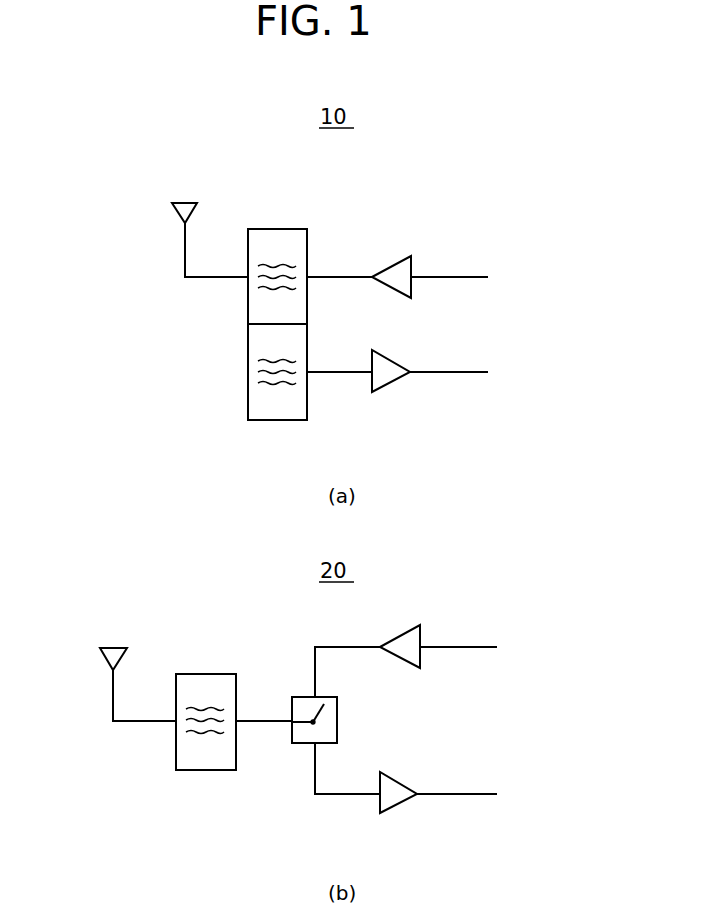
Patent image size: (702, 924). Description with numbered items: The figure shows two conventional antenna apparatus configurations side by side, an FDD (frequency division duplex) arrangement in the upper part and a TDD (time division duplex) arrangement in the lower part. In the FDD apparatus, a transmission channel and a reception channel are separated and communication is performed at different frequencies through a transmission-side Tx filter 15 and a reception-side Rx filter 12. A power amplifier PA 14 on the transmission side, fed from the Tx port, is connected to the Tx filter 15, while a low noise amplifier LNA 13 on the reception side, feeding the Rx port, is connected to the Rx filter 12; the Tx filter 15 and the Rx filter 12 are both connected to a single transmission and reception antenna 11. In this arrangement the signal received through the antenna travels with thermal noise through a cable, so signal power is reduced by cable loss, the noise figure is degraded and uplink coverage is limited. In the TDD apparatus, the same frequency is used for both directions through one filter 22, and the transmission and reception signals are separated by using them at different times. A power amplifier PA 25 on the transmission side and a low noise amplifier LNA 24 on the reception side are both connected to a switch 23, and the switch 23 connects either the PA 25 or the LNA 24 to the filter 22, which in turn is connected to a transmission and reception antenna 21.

The transmission and reception antenna 11 is at (172, 214).
The Rx filter 12 is at (248, 371).
The low noise amplifier (LNA) 13 is at (397, 360).
The power amplifier (PA) 14 is at (413, 264).
The Tx filter 15 is at (307, 250).
The transmission and reception antenna 21 is at (107, 661).
The filter 22 is at (176, 748).
The switch 23 is at (297, 745).
The low noise amplifier (LNA) 24 is at (405, 782).
The power amplifier (PA) 25 is at (420, 633).